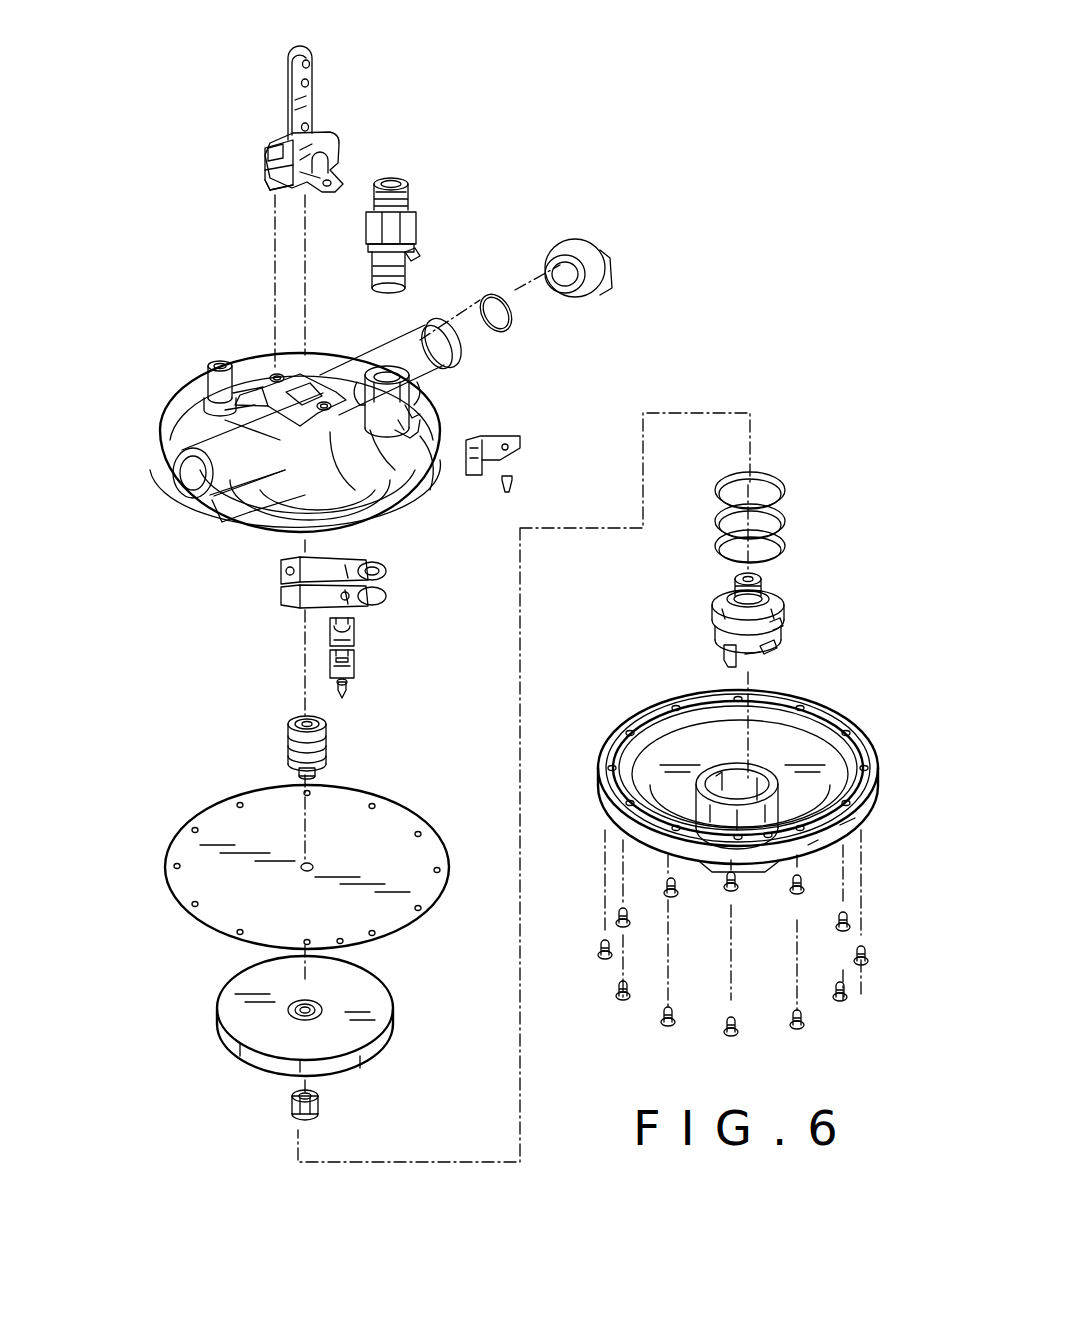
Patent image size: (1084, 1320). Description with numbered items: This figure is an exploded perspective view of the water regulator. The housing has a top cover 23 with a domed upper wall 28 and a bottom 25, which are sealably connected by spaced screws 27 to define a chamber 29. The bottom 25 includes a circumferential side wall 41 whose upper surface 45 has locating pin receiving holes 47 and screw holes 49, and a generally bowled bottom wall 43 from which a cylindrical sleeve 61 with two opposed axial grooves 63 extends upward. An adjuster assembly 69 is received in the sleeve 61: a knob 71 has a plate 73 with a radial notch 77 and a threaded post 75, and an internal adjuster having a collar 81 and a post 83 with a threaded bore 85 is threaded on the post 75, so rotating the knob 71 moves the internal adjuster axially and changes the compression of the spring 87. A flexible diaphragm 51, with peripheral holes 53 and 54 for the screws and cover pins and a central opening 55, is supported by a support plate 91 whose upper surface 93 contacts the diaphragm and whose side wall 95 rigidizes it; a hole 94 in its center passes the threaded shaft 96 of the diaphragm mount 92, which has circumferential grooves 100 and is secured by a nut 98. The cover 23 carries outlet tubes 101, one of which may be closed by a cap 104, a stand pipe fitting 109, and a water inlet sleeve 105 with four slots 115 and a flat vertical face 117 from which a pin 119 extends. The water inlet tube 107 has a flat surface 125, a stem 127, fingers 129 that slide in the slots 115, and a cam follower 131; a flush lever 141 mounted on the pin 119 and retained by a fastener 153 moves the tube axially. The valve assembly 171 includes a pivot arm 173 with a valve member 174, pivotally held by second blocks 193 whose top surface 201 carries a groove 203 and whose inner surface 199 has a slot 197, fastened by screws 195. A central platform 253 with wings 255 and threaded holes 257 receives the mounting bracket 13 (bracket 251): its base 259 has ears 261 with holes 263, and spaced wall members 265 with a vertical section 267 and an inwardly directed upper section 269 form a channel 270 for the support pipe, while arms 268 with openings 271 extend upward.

The mounting bracket 13 is at (298, 122).
The arms 268 is at (292, 52).
The openings 271 is at (310, 82).
The inwardly directed upper section 269 is at (318, 130).
The ears 261 is at (270, 150).
The wall members 265 is at (330, 135).
The holes 263 is at (340, 160).
The vertical section 267 is at (268, 170).
The channel 270 is at (267, 180).
The base 259 is at (290, 191).
The flat surface 125 is at (358, 218).
The water inlet tube 107 is at (411, 220).
The fingers 129 is at (408, 246).
The cam follower 131 is at (416, 254).
The stem 127 is at (410, 265).
The cap 104 is at (575, 243).
The outlet tubes 101 is at (405, 345).
The top cover 23 is at (314, 400).
The threaded holes 257 is at (276, 374).
The platform 253 is at (300, 392).
The wings 255 is at (272, 393).
The slots 115 is at (368, 372).
The fitting 109 is at (210, 368).
The bracket 251 is at (210, 400).
The water inlet sleeve 105 is at (412, 399).
The domed upper wall 28 is at (420, 425).
The flush lever 141 is at (505, 440).
The fastener 153 is at (515, 472).
The pin 119 is at (425, 470).
The flat vertical face 117 is at (395, 440).
The chamber 29 is at (440, 448).
The pivot arm 173 is at (345, 568).
The valve assembly 171 is at (392, 580).
The valve member 174 is at (388, 582).
The groove 203 is at (334, 624).
The top surface 201 is at (356, 622).
The second blocks 193 is at (332, 636).
The slot 197 is at (356, 640).
The inner surface 199 is at (332, 655).
The screws 195 is at (350, 690).
The hole 94 is at (295, 726).
The diaphragm mount 92 is at (309, 744).
The circumferential grooves 100 is at (292, 752).
The threaded shaft 96 is at (298, 770).
The peripheral holes 54 is at (398, 812).
The flexible diaphragm 51 is at (317, 861).
The central opening 55 is at (313, 864).
The peripheral holes 53 is at (441, 870).
The upper surface 93 is at (360, 990).
The support plate 91 is at (345, 1016).
The side wall 95 is at (380, 1060).
The nut 98 is at (322, 1110).
The spring 87 is at (790, 500).
The threaded bore 85 is at (730, 598).
The threaded post 75 is at (766, 590).
The adjuster assembly 69 is at (743, 617).
The post 83 is at (722, 606).
The collar 81 is at (785, 612).
The notch 77 is at (776, 646).
The knob 71 is at (730, 662).
The plate 73 is at (762, 654).
The locating pin receiving holes 47 is at (822, 715).
The upper surface 45 is at (860, 745).
The bottom wall 43 is at (740, 774).
The grooves 63 is at (722, 774).
The sleeve 61 is at (780, 795).
The side wall 41 is at (878, 800).
The bottom 25 is at (739, 793).
The screw holes 49 is at (810, 848).
The screws 27 is at (838, 1008).